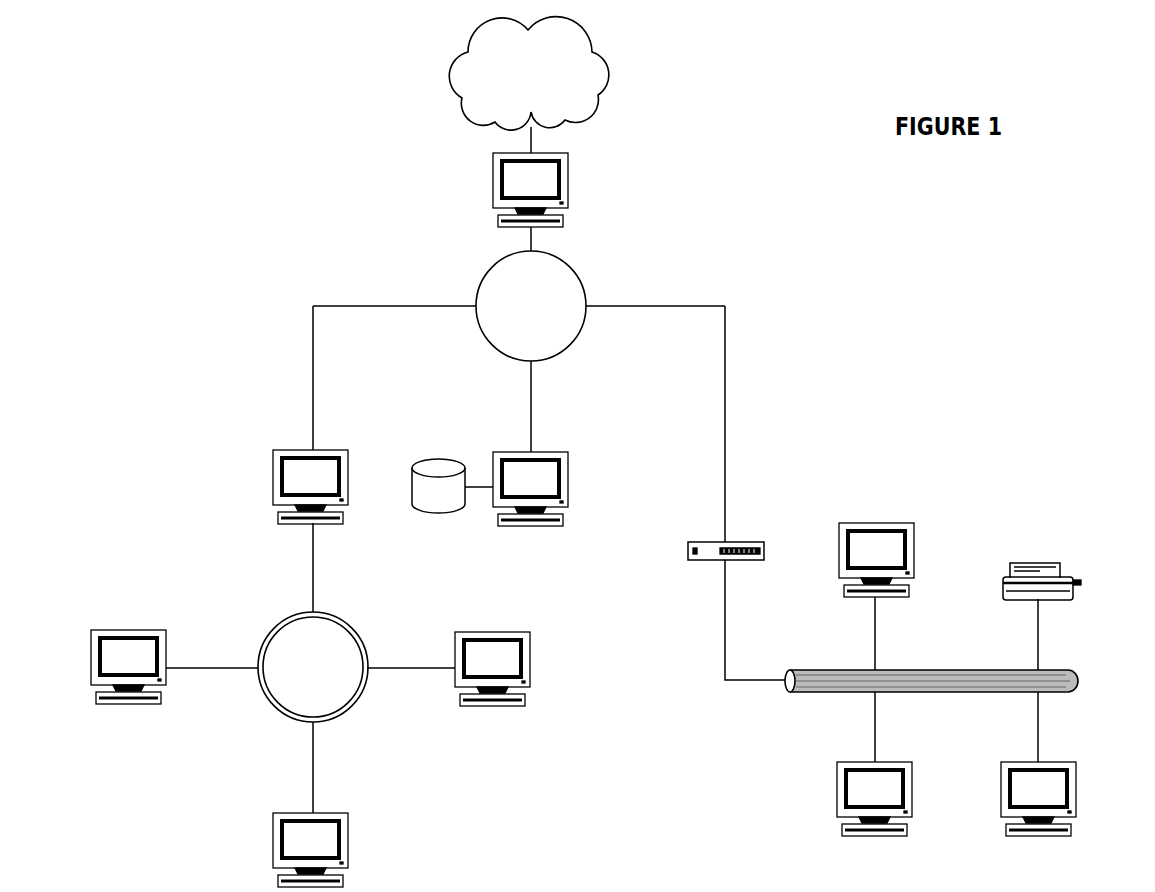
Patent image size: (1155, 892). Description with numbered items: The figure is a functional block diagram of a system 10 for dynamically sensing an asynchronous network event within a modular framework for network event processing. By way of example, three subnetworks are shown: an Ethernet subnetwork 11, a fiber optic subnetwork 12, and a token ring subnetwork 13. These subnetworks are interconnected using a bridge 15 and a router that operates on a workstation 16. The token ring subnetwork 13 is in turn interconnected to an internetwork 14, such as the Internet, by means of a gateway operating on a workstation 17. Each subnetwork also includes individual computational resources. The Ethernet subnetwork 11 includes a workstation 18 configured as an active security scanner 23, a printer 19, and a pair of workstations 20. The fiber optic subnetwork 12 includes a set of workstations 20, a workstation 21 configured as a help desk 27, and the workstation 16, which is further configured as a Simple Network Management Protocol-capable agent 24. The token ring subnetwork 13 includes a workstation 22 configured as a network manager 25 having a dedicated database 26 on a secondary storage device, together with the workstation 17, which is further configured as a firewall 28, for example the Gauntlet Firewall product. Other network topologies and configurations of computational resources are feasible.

The system 10 is at (178, 115).
The Ethernet subnetwork 11 is at (1058, 672).
The fiber optic subnetwork 12 is at (265, 703).
The token ring subnetwork 13 is at (566, 263).
The internetwork 14 is at (466, 97).
The bridge 15 is at (745, 542).
The workstation 16 is at (290, 477).
The workstation 17 is at (544, 179).
The workstation 18 is at (888, 549).
The printer 19 is at (1073, 582).
The workstations 20 is at (166, 648).
The workstation 21 is at (323, 839).
The workstation 22 is at (541, 478).
The active security scanner 23 is at (854, 530).
The SNMP-capable agent 24 is at (291, 458).
The network manager 25 is at (506, 460).
The database 26 is at (412, 497).
The help desk 27 is at (286, 823).
The firewall 28 is at (506, 162).